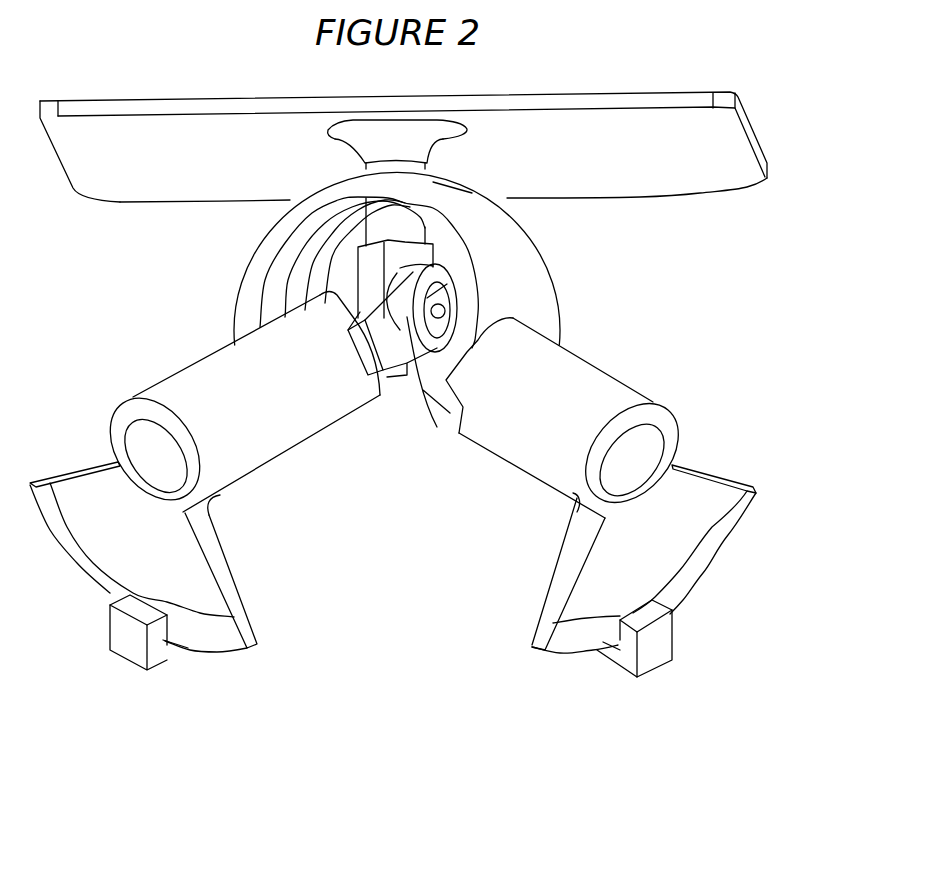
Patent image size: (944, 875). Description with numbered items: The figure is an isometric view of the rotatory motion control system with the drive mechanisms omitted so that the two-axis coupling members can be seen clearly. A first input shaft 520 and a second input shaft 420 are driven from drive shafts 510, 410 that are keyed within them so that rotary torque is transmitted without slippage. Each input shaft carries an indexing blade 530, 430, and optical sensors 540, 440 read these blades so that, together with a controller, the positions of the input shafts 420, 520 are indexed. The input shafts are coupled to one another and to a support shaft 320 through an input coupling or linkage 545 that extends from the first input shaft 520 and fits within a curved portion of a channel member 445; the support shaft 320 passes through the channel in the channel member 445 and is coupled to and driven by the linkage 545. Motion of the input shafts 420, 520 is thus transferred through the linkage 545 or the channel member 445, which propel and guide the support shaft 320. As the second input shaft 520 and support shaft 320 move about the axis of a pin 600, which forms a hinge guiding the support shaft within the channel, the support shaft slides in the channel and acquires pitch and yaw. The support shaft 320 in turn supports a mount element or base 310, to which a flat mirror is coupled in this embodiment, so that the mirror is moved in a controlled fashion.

The mount element or base 310 is at (675, 133).
The support shaft 320 is at (383, 220).
The channel member 445 is at (503, 224).
The pin 600 is at (452, 283).
The input coupling or linkage 545 is at (407, 413).
The drive shaft 510 is at (155, 455).
The first input shaft 520 is at (206, 404).
The drive shaft 410 is at (637, 447).
The second input shaft 420 is at (595, 419).
The indexing blade 530 is at (173, 587).
The optical sensor 540 is at (125, 640).
The indexing blade 430 is at (613, 567).
The optical sensor 440 is at (660, 647).